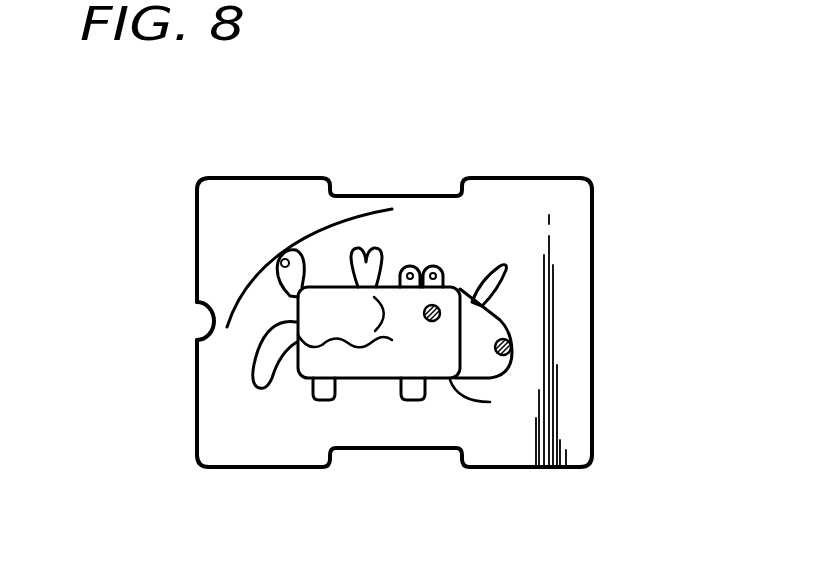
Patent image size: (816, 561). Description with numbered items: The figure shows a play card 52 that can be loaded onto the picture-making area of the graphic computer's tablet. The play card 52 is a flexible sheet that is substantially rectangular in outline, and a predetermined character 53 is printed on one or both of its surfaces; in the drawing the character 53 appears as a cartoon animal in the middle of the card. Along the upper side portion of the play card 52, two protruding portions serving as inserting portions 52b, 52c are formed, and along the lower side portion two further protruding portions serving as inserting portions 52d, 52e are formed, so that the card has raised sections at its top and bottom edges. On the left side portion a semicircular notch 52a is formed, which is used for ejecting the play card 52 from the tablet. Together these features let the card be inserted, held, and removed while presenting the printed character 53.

The play card 52 is at (580, 278).
The semicircular notch 52a is at (208, 312).
The protruding portion (inserting portion) 52b is at (287, 188).
The protruding portion (inserting portion) 52c is at (533, 187).
The protruding portion (inserting portion) 52d is at (257, 462).
The protruding portion (inserting portion) 52e is at (529, 462).
The character 53 is at (490, 402).